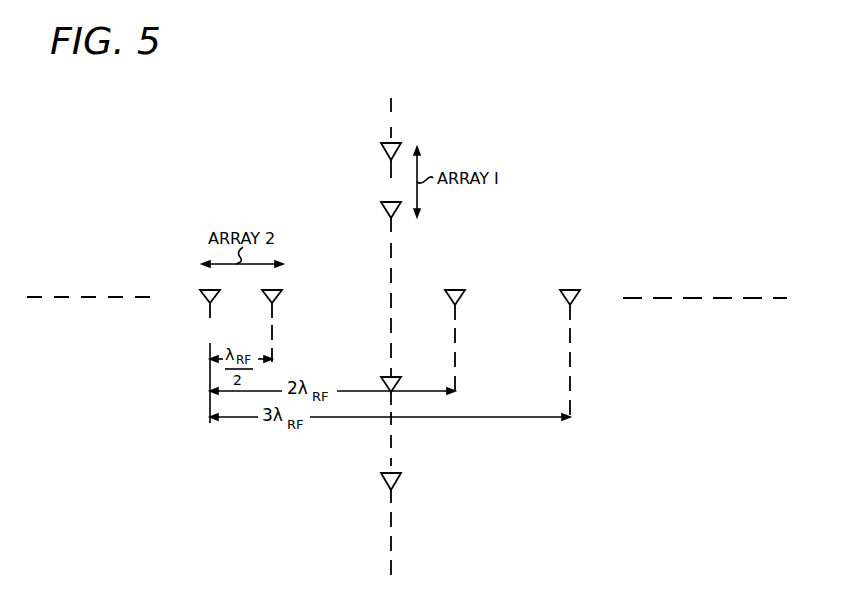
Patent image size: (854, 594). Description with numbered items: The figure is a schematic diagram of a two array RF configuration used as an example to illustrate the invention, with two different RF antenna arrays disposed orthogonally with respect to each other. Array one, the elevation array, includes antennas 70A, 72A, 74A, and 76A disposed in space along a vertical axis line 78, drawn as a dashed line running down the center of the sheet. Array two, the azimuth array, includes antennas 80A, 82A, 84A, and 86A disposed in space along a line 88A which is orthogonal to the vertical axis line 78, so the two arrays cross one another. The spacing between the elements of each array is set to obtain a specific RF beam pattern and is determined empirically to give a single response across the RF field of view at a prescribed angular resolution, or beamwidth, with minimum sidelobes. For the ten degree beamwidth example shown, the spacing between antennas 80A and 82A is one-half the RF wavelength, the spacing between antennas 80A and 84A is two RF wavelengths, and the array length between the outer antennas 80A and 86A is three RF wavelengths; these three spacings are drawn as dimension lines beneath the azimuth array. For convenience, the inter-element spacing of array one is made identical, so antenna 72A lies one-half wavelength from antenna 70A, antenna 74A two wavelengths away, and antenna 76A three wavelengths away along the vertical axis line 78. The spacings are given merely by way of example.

The vertical axis line 78 is at (392, 111).
The antenna 70A is at (382, 144).
The antenna 72A is at (381, 203).
The antenna 74A is at (399, 378).
The antenna 76A is at (401, 485).
The antenna 80A is at (203, 295).
The antenna 82A is at (277, 298).
The antenna 84A is at (460, 296).
The antenna 86A is at (575, 296).
The line 88A is at (772, 297).